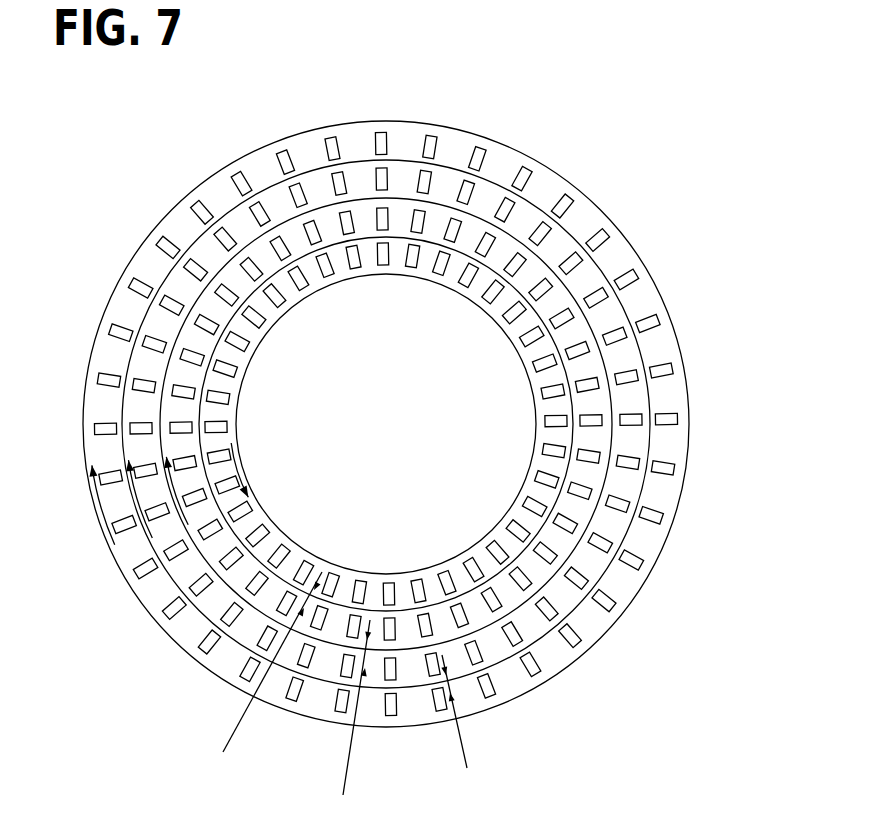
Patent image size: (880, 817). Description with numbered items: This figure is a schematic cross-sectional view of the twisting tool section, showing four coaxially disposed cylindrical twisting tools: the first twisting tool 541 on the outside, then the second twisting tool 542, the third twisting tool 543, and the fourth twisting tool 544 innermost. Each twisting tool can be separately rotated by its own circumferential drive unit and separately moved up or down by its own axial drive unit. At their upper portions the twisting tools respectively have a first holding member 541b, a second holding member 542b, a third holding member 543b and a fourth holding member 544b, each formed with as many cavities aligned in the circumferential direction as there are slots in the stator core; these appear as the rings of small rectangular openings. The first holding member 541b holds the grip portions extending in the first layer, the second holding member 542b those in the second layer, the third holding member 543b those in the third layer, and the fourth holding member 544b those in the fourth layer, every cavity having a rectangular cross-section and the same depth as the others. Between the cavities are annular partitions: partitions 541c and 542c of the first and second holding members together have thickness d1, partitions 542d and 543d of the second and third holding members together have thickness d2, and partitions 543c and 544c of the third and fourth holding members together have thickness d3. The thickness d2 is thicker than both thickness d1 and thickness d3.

The first twisting tool 541 is at (587, 220).
The second twisting tool 542 is at (593, 277).
The third twisting tool 543 is at (577, 338).
The fourth twisting tool 544 is at (557, 377).
The first holding member 541b is at (484, 165).
The annular partition 541c is at (636, 533).
The second holding member 542b is at (462, 187).
The annular partition 542c is at (613, 555).
The annular partition 542d is at (563, 573).
The third holding member 543b is at (412, 217).
The annular partition 543c is at (532, 592).
The annular partition 543d is at (550, 572).
The fourth holding member 544b is at (408, 250).
The annular partition 544c is at (505, 572).
The thickness of partitions of first and second holding members d1 is at (471, 713).
The thickness of partitions of second and third holding members d2 is at (363, 707).
The thickness of partitions of third and fourth holding members d3 is at (272, 666).